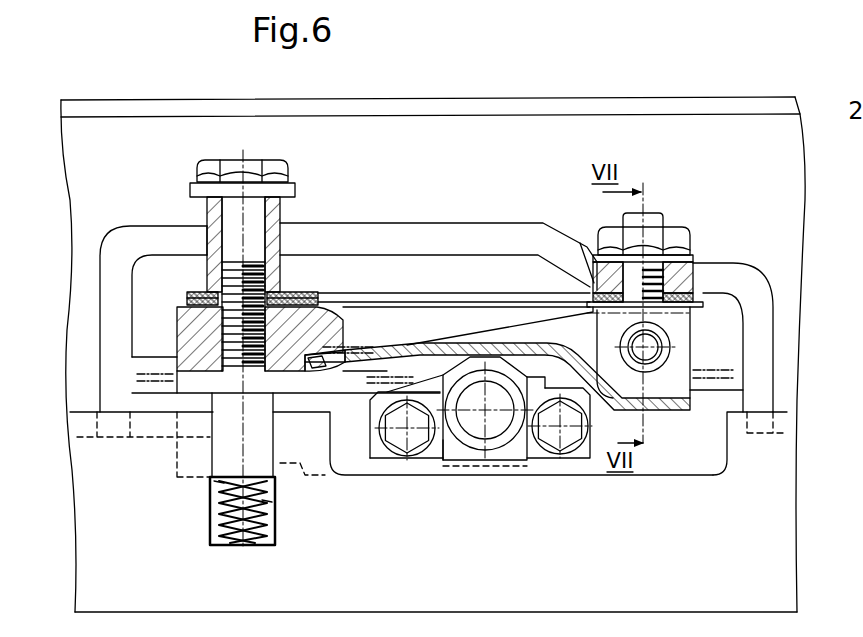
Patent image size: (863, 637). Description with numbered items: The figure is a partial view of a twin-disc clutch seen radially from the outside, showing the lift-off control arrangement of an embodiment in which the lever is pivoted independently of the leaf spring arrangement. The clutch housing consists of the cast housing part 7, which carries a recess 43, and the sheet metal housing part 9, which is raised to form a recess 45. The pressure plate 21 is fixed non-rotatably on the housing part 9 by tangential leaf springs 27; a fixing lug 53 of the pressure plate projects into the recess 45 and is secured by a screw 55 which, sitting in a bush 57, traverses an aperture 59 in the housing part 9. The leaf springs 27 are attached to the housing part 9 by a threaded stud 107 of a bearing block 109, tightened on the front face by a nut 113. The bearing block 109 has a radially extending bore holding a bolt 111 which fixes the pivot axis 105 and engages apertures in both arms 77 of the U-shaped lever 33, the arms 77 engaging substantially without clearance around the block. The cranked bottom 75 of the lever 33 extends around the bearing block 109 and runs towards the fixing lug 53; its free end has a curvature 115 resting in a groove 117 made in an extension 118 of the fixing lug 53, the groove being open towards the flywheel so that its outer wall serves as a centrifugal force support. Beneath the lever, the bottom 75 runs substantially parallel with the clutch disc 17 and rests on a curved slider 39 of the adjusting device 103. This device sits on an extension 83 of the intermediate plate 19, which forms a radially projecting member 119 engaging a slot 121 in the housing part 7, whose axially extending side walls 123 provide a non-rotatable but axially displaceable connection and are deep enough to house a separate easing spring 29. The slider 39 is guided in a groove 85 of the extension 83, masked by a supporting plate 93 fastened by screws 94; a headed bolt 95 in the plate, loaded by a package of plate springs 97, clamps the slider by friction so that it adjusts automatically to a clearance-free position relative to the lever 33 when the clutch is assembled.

The housing part 9 is at (164, 130).
The housing part 7 is at (787, 548).
The pressure plate 21 is at (143, 306).
The clutch disc 17 is at (135, 380).
The fixing lug 53 is at (193, 338).
The extension 83 is at (410, 368).
The bush 57 is at (208, 214).
The aperture 59 is at (197, 252).
The screw 55 is at (250, 162).
The recess 45 is at (343, 255).
The tangential leaf springs 27 is at (489, 293).
The extension 118 is at (348, 307).
The arms 77 is at (582, 323).
The bottom 75 is at (587, 283).
The lever 33 is at (502, 337).
The slider 39 is at (463, 363).
The supporting plate 93 is at (430, 460).
The adjusting device 103 is at (548, 466).
The package of plate springs 97 is at (523, 437).
The groove 85 is at (445, 440).
The bolt 95 is at (493, 428).
The screws 94 is at (397, 440).
The recess 43 is at (667, 478).
The intermediate plate 19 is at (717, 458).
The bearing block 109 is at (688, 343).
The pivot axis 105 is at (650, 347).
The bolt 111 is at (653, 360).
The threaded stud 107 is at (658, 213).
The nut 113 is at (687, 240).
The groove 117 is at (290, 365).
The curvature 115 is at (325, 363).
The projecting member 119 is at (220, 450).
The slot 121 is at (210, 547).
The easing spring 29 is at (235, 545).
The side walls 123 is at (212, 485).